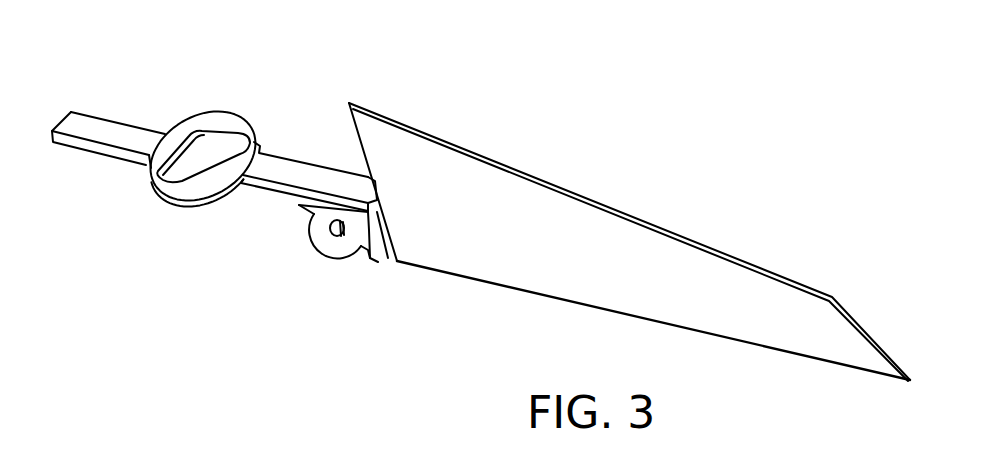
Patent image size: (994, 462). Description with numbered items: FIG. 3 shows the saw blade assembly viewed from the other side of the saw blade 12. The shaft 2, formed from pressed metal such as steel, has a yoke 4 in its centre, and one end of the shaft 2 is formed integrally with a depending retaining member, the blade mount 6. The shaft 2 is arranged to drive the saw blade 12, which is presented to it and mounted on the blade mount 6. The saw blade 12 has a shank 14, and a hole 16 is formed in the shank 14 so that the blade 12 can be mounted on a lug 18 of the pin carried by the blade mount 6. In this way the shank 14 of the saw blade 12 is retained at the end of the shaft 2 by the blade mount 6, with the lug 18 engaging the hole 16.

The shaft 2 is at (281, 172).
The yoke 4 is at (145, 182).
The blade mount 6 is at (371, 268).
The saw blade 12 is at (560, 210).
The shank 14 is at (348, 252).
The hole 16 is at (361, 150).
The lug 18 is at (333, 229).